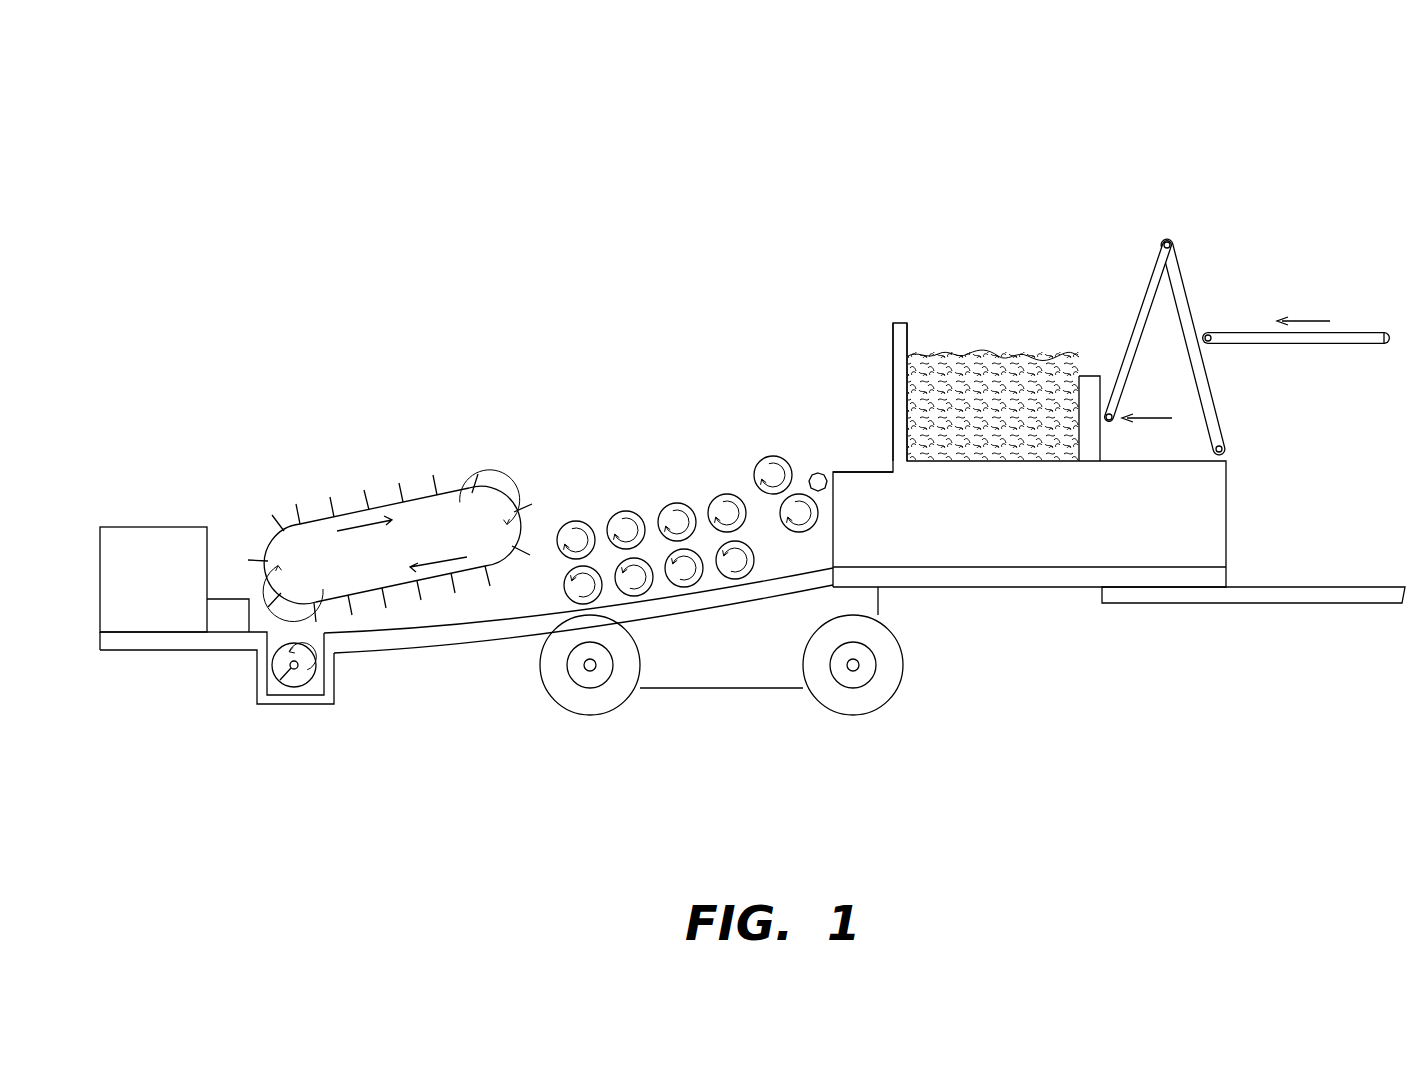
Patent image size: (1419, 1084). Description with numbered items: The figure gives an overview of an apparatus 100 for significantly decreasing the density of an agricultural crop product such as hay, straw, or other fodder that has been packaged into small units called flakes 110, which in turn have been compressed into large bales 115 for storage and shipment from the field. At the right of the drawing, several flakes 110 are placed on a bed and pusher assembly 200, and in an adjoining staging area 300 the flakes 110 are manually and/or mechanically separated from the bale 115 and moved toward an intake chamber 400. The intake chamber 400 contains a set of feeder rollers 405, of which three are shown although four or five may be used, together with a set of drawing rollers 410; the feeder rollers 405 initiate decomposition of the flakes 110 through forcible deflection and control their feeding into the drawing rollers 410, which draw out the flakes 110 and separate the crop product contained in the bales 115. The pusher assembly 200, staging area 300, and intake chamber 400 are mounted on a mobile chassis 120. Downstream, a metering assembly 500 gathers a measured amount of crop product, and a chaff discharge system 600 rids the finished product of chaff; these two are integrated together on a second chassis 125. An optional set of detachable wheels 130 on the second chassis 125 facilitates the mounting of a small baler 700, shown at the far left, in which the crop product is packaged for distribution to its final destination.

The apparatus 100 is at (727, 160).
The flakes 110 is at (942, 363).
The bales 115 is at (999, 325).
The mobile chassis 120 is at (1042, 577).
The second chassis 125 is at (448, 637).
The detachable wheels 130 is at (592, 707).
The bed and pusher assembly 200 is at (1396, 194).
The staging area 300 is at (893, 258).
The intake chamber 400 is at (833, 356).
The feeder rollers 405 is at (806, 438).
The drawing rollers 410 is at (618, 518).
The metering assembly 500 is at (538, 420).
The chaff discharge system 600 is at (236, 676).
The small baler 700 is at (153, 500).